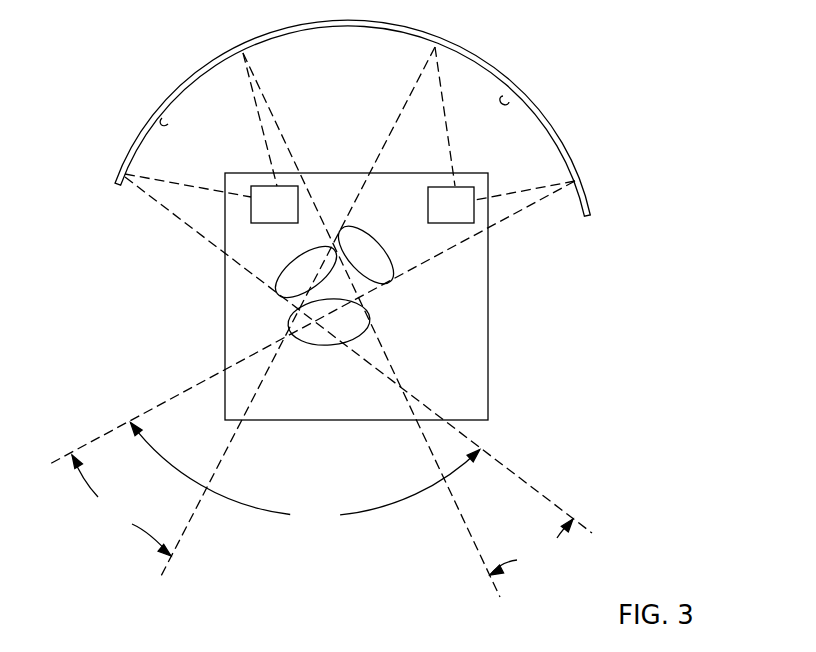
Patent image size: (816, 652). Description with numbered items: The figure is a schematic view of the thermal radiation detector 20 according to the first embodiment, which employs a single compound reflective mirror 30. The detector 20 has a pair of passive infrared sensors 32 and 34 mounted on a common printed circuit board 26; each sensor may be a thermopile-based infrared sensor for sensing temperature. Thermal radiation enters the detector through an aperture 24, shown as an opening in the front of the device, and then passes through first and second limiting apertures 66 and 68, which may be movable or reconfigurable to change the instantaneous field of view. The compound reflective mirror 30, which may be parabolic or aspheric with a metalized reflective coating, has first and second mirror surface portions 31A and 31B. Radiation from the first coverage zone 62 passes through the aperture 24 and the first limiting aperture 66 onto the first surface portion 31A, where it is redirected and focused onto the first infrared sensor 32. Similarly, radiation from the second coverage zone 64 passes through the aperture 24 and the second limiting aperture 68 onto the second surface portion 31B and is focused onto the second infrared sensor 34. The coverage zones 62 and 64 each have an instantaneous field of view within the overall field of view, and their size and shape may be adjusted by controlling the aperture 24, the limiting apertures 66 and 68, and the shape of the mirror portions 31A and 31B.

The thermal radiation detector 20 is at (618, 132).
The aperture 24 is at (320, 343).
The printed circuit board 26 is at (487, 288).
The compound reflective mirror 30 is at (475, 53).
The first mirror surface portion 31A is at (166, 121).
The second mirror surface portion 31B is at (506, 101).
The first infrared sensor 32 is at (252, 212).
The second infrared sensor 34 is at (468, 212).
The first coverage zone 62 is at (540, 490).
The second coverage zone 64 is at (95, 441).
The first limiting aperture 66 is at (296, 255).
The second limiting aperture 68 is at (367, 230).